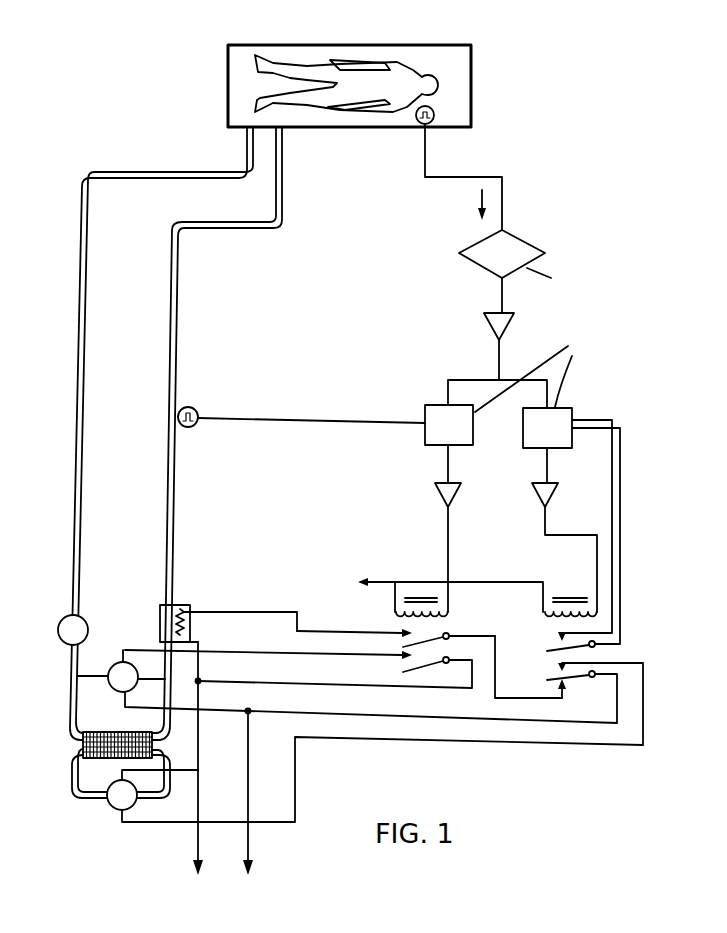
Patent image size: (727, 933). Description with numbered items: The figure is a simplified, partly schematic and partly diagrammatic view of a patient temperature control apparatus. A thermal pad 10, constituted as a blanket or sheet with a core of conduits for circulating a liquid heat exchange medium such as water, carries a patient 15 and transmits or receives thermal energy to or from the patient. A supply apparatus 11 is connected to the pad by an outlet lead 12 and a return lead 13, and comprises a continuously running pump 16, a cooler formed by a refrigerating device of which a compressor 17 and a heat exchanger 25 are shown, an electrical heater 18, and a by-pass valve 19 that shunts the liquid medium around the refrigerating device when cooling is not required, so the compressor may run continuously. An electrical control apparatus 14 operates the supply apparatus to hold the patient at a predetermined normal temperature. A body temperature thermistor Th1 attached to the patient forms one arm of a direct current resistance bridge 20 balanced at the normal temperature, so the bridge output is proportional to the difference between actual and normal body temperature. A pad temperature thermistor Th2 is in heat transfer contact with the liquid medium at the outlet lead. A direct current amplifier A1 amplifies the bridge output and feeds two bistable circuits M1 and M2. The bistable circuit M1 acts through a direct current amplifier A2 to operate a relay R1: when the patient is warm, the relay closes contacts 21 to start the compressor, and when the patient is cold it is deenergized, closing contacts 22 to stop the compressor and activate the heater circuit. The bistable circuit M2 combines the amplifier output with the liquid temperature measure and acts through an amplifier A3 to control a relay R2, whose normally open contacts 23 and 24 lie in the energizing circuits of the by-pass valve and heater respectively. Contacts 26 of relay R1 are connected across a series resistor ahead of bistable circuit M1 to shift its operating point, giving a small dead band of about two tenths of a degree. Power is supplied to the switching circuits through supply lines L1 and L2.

The thermal pad 10 is at (292, 55).
The patient 15 is at (388, 65).
The supply apparatus 11 is at (61, 697).
The outlet lead 12 is at (176, 508).
The return lead 13 is at (76, 503).
The electrical control apparatus 14 is at (536, 384).
The pump 16 is at (58, 631).
The compressor 17 is at (114, 806).
The electrical heater 18 is at (182, 606).
The by-pass valve 19 is at (114, 684).
The direct current resistance bridge 20 is at (515, 241).
The contacts 21 is at (558, 673).
The contacts 22 is at (559, 685).
The contacts 23 is at (408, 664).
The contacts 24 is at (408, 640).
The heat exchanger 25 is at (82, 757).
The contacts 26 is at (558, 644).
The body temperature thermistor Th1 is at (433, 121).
The pad temperature thermistor Th2 is at (196, 408).
The direct current amplifier A1 is at (510, 323).
The direct current amplifier A2 is at (550, 494).
The amplifier A3 is at (437, 493).
The bistable circuit M1 is at (547, 428).
The bistable circuit M2 is at (449, 425).
The relay R1 is at (598, 616).
The relay R2 is at (400, 561).
The supply line L1 is at (198, 772).
The supply line L2 is at (248, 806).